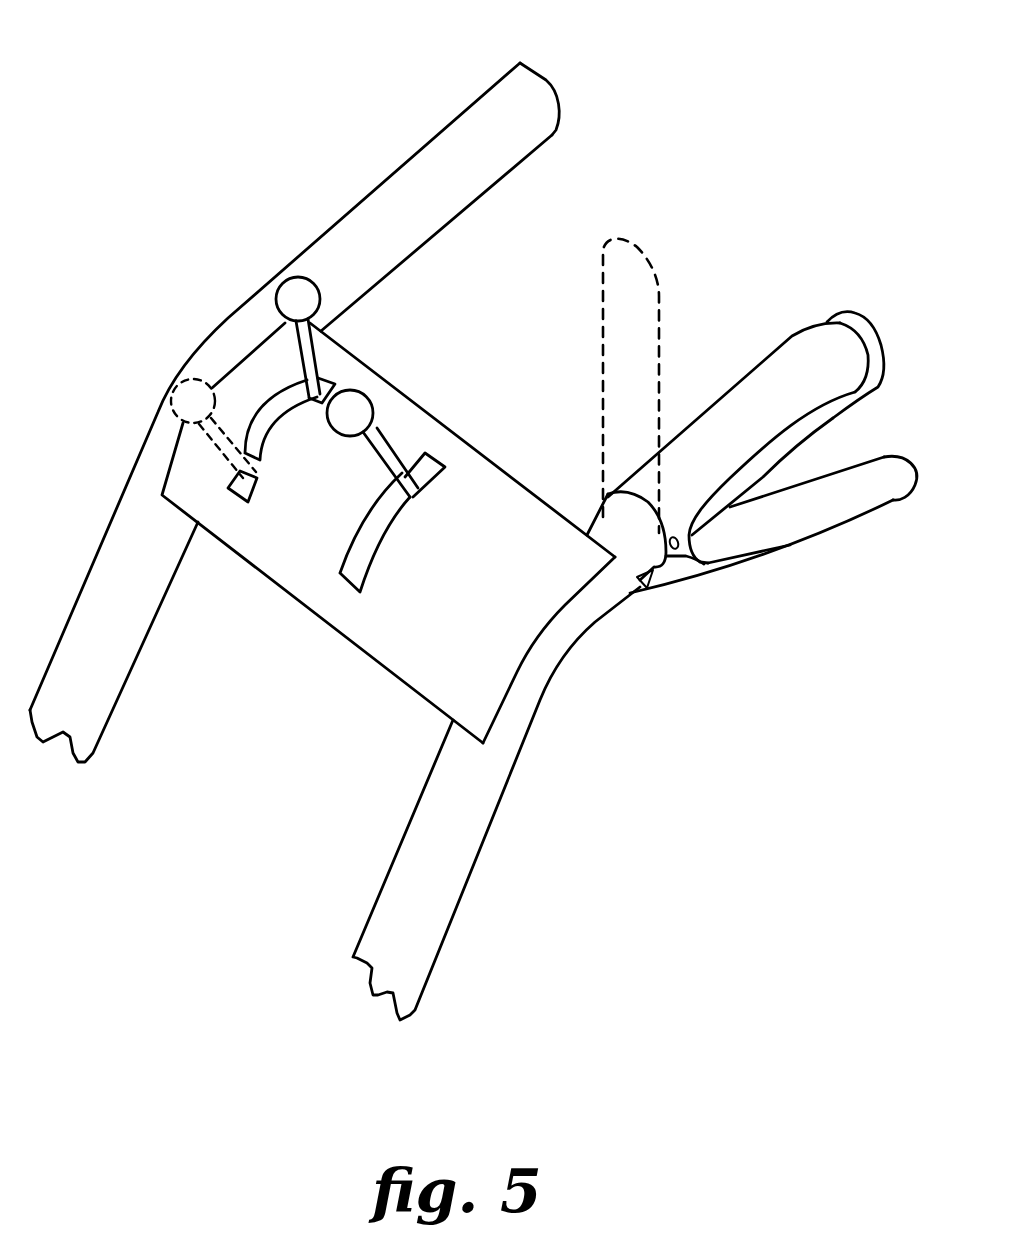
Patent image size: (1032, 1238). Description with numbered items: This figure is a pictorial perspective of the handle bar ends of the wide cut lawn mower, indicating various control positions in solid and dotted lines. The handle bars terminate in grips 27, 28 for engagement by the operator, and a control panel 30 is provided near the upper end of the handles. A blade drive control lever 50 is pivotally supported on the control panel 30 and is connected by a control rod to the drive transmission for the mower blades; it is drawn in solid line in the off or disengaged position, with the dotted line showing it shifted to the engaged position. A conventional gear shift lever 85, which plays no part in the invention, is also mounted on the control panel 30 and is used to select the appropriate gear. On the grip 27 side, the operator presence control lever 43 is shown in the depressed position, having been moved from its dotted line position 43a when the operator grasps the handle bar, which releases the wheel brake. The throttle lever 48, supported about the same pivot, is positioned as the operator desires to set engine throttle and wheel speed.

The grip 28 is at (550, 82).
The control panel 30 is at (400, 660).
The blade drive control lever 50 is at (288, 286).
The gear shift lever 85 is at (388, 441).
The operator presence control lever 43 is at (753, 385).
The dotted line position of operator presence control lever 43a is at (639, 255).
The grip 27 is at (884, 347).
The throttle lever 48 is at (850, 487).